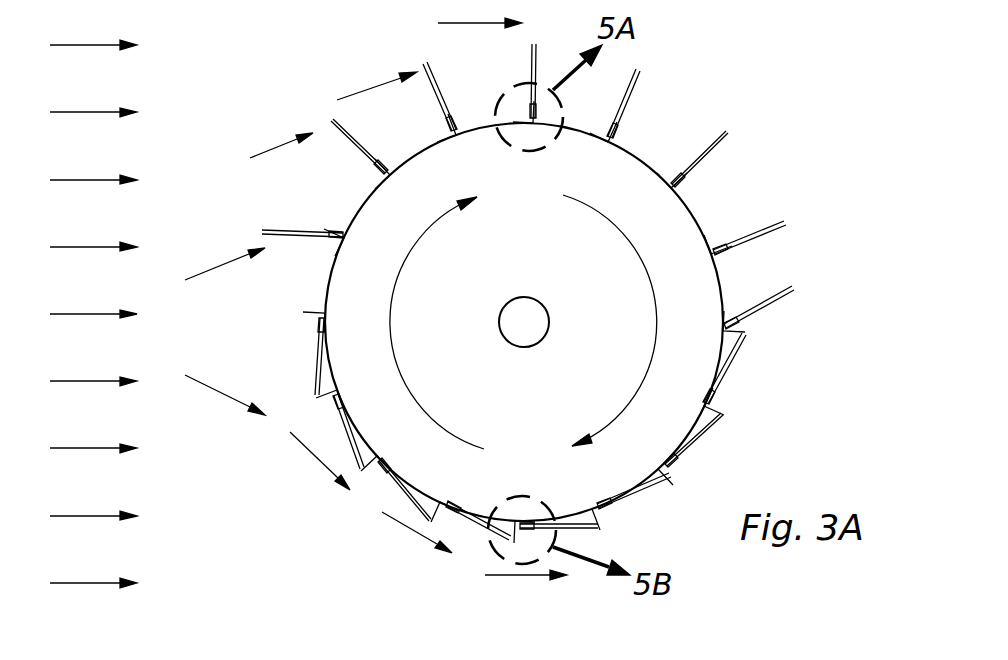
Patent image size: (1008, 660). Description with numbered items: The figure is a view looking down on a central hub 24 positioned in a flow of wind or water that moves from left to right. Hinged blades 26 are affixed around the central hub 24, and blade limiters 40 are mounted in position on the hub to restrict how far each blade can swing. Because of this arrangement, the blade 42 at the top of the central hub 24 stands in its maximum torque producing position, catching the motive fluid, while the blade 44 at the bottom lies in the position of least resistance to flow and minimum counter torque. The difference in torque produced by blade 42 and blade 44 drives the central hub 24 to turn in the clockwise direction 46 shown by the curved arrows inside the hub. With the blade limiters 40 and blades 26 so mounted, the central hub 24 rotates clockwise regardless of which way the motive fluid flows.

The central hub 24 is at (685, 202).
The blades 26 is at (641, 73).
The blade limiters 40 is at (743, 337).
The blade 42 is at (530, 62).
The blade 44 is at (640, 498).
The clockwise direction 46 is at (657, 295).